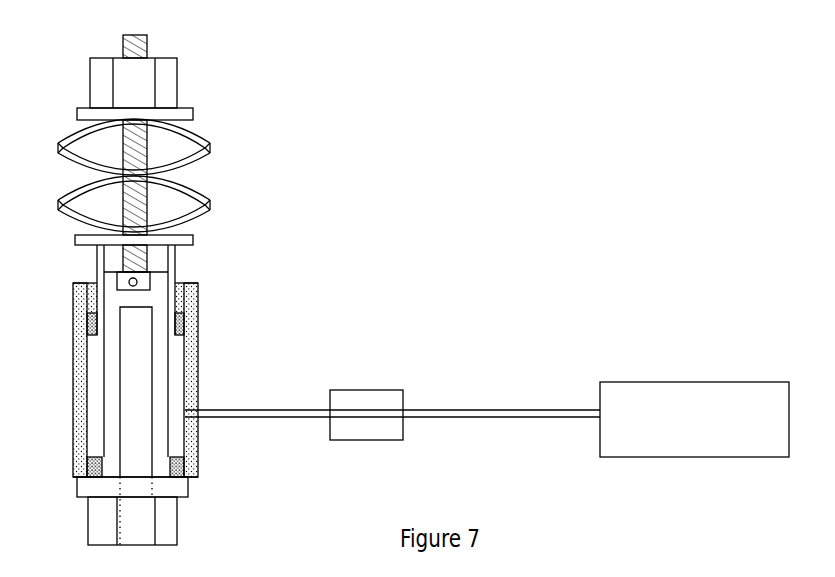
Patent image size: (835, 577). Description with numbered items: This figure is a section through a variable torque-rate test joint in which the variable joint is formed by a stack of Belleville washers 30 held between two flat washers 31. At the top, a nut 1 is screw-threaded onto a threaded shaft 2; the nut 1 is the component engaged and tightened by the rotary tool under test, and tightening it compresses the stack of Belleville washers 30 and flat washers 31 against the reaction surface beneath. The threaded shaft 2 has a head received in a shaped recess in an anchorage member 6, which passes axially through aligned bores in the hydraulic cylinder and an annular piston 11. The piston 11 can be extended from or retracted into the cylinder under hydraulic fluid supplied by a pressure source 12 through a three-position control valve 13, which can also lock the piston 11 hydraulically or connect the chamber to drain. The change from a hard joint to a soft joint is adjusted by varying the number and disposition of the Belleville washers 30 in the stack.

The nut 1 is at (164, 88).
The threaded shaft 2 is at (145, 45).
The anchorage member 6 is at (105, 373).
The annular piston 11 is at (172, 268).
The pressure source 12 is at (635, 417).
The three-position control valve 13 is at (362, 395).
The stack of Belleville washers 30 is at (245, 119).
The flat washers 31 is at (87, 117).